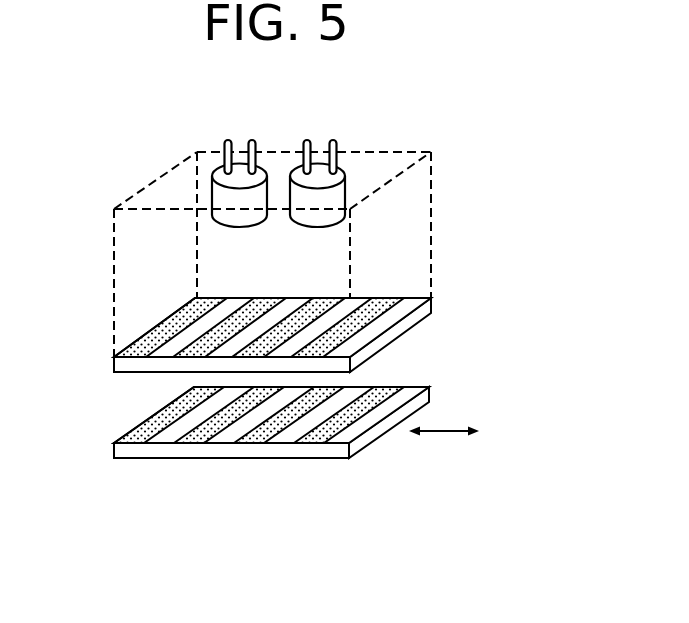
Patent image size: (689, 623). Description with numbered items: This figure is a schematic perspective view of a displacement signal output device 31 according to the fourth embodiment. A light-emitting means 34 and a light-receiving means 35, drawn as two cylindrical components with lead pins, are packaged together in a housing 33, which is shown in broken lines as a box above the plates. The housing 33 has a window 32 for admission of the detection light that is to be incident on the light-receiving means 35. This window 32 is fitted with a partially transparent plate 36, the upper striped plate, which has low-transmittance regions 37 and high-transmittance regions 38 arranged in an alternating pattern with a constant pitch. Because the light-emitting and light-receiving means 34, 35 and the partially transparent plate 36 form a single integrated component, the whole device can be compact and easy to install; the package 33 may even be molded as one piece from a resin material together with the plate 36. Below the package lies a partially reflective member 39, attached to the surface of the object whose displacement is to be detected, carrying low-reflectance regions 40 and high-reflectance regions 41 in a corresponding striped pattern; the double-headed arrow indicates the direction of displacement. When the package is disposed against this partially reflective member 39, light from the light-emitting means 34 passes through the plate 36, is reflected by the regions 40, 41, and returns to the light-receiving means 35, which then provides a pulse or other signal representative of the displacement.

The displacement signal output device 31 is at (478, 276).
The window 32 is at (398, 338).
The housing 33 is at (113, 260).
The light-emitting means 34 is at (212, 192).
The light-receiving means 35 is at (342, 197).
The partially transparent plate 36 is at (116, 363).
The low-transmittance regions 37 is at (325, 298).
The high-transmittance regions 38 is at (167, 350).
The rear substrate 39 is at (148, 450).
The low-reflectance regions 40 is at (243, 445).
The high-reflectance regions 41 is at (335, 443).